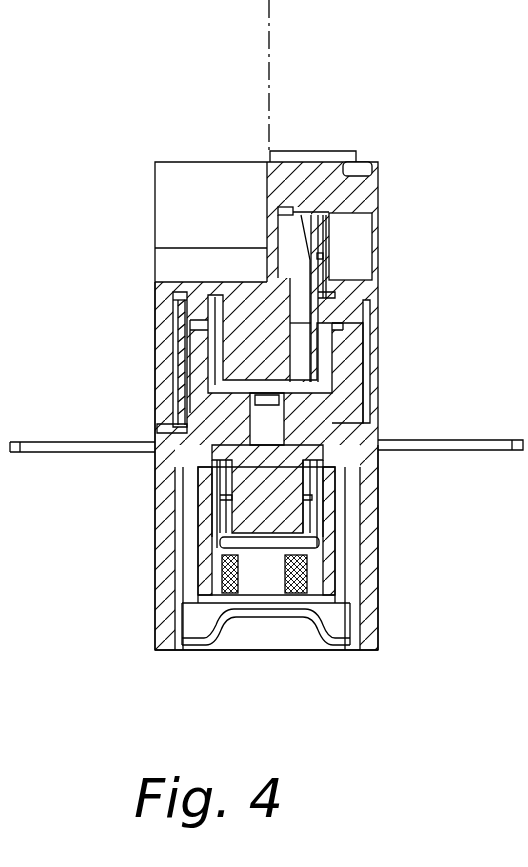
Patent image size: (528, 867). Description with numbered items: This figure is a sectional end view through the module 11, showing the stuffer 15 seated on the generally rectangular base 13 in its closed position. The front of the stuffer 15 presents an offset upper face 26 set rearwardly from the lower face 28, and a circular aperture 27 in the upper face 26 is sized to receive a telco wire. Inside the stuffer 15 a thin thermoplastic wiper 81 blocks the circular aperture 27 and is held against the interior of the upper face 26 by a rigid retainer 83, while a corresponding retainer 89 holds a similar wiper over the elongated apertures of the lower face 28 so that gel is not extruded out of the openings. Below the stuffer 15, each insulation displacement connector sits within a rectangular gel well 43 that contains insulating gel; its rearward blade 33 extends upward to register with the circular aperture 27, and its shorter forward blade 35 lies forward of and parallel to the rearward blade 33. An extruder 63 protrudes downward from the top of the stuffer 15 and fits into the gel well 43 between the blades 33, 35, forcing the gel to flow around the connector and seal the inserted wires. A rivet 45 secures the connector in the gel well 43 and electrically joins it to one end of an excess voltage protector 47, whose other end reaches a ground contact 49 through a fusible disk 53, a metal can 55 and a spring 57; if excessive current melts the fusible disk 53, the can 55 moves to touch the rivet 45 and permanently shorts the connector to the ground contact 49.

The module 11 is at (406, 257).
The base 13 is at (370, 622).
The stuffer 15 is at (366, 201).
The upper face 26 is at (272, 207).
The circular apertures 27 is at (300, 230).
The lower face 28 is at (155, 355).
The rearward blade 33 is at (340, 356).
The forward blade 35 is at (178, 324).
The gel well 43 is at (175, 397).
The rivet 45 is at (365, 414).
The excess voltage protector 47 is at (257, 482).
The ground contact 49 is at (468, 452).
The fusible disk 53 is at (240, 543).
The metal can 55 is at (318, 537).
The spring 57 is at (315, 578).
The extruder 63 is at (205, 332).
The wiper 81 is at (283, 218).
The retainer 83 is at (283, 243).
The retainer 89 is at (180, 302).